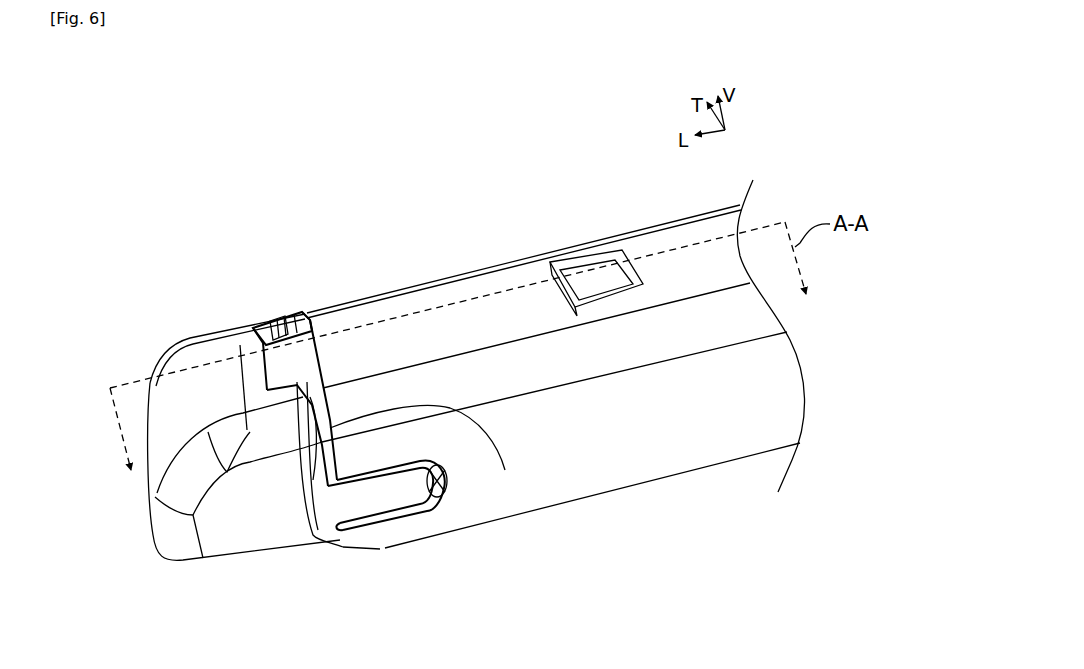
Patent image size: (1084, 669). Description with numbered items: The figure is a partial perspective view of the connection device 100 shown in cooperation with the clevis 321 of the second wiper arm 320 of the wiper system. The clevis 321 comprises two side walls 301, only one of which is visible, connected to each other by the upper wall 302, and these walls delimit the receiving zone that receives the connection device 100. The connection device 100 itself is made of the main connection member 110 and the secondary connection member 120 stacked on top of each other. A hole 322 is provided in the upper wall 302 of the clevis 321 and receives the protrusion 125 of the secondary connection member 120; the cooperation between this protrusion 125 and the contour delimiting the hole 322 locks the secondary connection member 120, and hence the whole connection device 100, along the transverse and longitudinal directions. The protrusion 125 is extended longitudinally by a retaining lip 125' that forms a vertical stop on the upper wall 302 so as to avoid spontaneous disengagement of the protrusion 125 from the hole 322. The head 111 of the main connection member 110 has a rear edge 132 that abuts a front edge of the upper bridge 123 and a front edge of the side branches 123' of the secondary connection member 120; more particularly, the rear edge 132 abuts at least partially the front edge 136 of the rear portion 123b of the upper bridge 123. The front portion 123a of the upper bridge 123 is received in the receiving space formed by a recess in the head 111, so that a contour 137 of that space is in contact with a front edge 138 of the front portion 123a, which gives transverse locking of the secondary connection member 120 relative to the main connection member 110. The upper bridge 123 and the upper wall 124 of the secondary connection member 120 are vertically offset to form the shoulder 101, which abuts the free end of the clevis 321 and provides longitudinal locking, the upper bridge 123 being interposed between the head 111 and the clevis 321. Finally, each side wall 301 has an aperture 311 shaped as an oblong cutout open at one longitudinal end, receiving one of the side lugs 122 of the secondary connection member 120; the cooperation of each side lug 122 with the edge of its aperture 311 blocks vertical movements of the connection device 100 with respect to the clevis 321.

The connection device 100 is at (101, 439).
The main connection member 110 is at (199, 348).
The head 111 is at (156, 381).
The secondary connection member 120 is at (325, 562).
The side lug 122 is at (393, 497).
The upper bridge 123 is at (301, 275).
The front portion of the upper bridge 123a is at (283, 334).
The rear portion of the upper bridge 123b is at (343, 274).
The side branches 123' is at (430, 499).
The upper wall 124 is at (322, 362).
The protrusion 125 is at (577, 238).
The retaining lip 125' is at (520, 240).
The rear edge 132 is at (282, 327).
The front edge 136 is at (282, 267).
The contour 137 is at (270, 327).
The front edge 138 is at (247, 430).
The shoulder 101 is at (298, 328).
The side wall 301 is at (657, 452).
The upper wall 302 is at (692, 236).
The aperture 311 is at (430, 507).
The second wiper arm 320 is at (633, 497).
The clevis 321 is at (454, 229).
The hole 322 is at (625, 249).